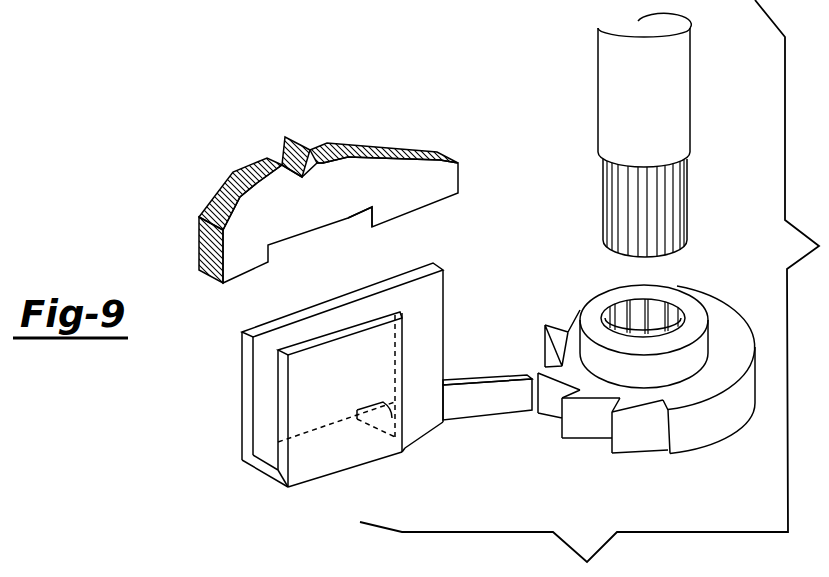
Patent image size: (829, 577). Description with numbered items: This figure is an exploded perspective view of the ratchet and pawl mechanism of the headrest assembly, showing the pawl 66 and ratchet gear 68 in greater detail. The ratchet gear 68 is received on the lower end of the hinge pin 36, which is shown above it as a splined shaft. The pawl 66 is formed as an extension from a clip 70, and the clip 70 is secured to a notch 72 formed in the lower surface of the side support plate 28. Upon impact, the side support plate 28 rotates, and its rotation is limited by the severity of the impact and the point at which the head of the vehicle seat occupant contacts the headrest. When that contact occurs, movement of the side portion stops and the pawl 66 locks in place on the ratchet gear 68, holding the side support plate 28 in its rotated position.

The side support plate 28 is at (260, 210).
The notch 72 is at (313, 229).
The hinge pin 36 is at (615, 117).
The ratchet gear 68 is at (707, 433).
The pawl 66 is at (483, 381).
The clip 70 is at (320, 463).